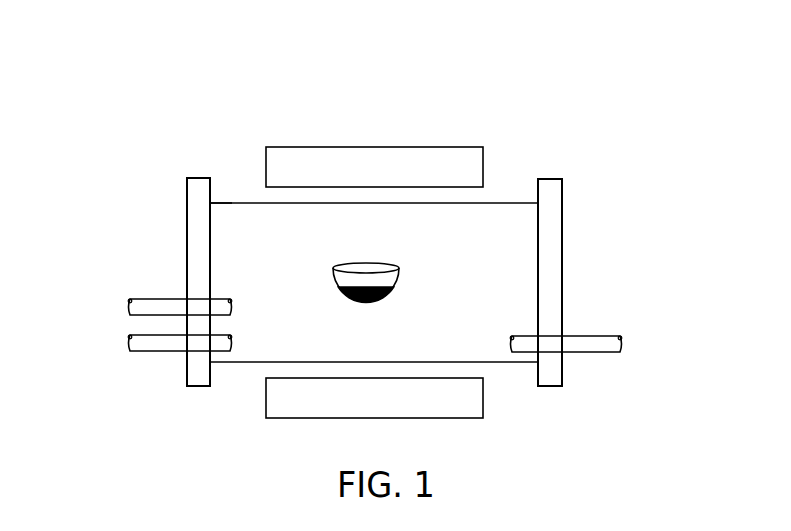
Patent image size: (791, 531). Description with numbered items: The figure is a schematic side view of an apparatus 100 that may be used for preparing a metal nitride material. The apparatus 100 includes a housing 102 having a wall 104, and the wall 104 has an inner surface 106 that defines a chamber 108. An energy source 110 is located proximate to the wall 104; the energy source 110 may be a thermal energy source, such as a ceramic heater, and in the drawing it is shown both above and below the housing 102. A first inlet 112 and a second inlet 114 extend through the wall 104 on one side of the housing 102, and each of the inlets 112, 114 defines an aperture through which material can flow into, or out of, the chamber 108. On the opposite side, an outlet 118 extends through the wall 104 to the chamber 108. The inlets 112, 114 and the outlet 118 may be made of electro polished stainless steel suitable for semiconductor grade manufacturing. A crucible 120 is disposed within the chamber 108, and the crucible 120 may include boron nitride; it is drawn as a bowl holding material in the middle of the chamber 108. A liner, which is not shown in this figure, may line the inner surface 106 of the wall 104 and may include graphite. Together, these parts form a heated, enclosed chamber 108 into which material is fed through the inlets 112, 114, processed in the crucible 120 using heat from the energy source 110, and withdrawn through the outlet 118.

The apparatus 100 is at (154, 41).
The housing 102 is at (511, 195).
The wall 104 is at (194, 194).
The inner surface 106 is at (211, 228).
The chamber 108 is at (266, 341).
The energy source 110 is at (372, 147).
The first inlet 112 is at (150, 298).
The second inlet 114 is at (150, 352).
The outlet 118 is at (590, 336).
The crucible 120 is at (400, 276).